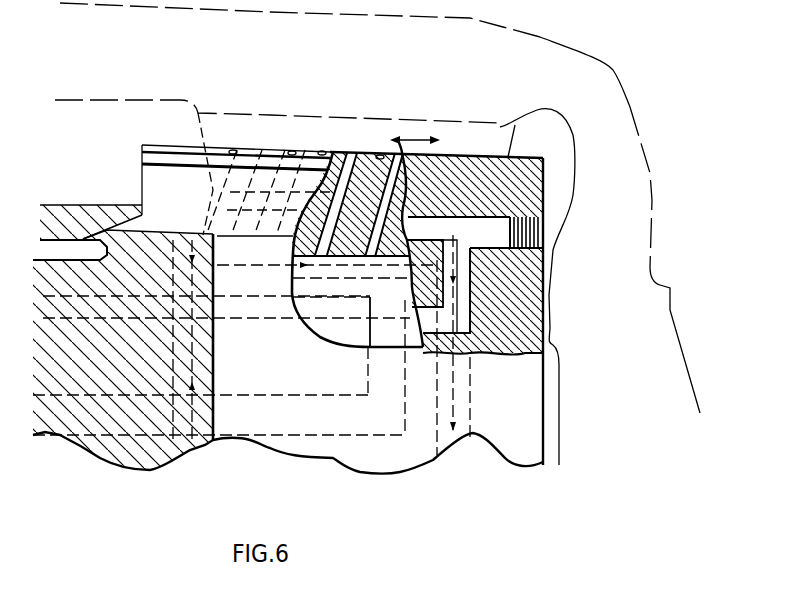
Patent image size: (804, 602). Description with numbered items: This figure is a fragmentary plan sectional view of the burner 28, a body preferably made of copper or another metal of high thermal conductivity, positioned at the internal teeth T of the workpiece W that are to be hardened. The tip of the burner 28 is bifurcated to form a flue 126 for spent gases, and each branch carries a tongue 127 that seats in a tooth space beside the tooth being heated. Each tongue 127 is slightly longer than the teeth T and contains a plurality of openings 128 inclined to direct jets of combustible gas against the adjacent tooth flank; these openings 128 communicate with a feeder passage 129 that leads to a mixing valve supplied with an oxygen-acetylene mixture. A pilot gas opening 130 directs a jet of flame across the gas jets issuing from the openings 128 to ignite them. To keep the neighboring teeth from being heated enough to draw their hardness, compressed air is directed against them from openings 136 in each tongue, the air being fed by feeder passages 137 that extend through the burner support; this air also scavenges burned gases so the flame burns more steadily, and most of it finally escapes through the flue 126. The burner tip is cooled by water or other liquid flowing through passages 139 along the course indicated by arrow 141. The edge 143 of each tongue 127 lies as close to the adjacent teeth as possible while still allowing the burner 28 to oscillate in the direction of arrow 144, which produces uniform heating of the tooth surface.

The workpiece W is at (611, 103).
The internal teeth T is at (220, 128).
The burner 28 is at (517, 318).
The flue 126 is at (284, 378).
The tongue 127 is at (141, 175).
The openings 128 is at (400, 150).
The feeder passage 129 is at (362, 293).
The pilot gas opening 130 is at (105, 222).
The openings 136 is at (322, 152).
The feeder passages 137 is at (468, 240).
The passages 139 is at (181, 455).
The arrow 141 is at (187, 355).
The edge 143 is at (141, 152).
The arrow 144 is at (405, 152).